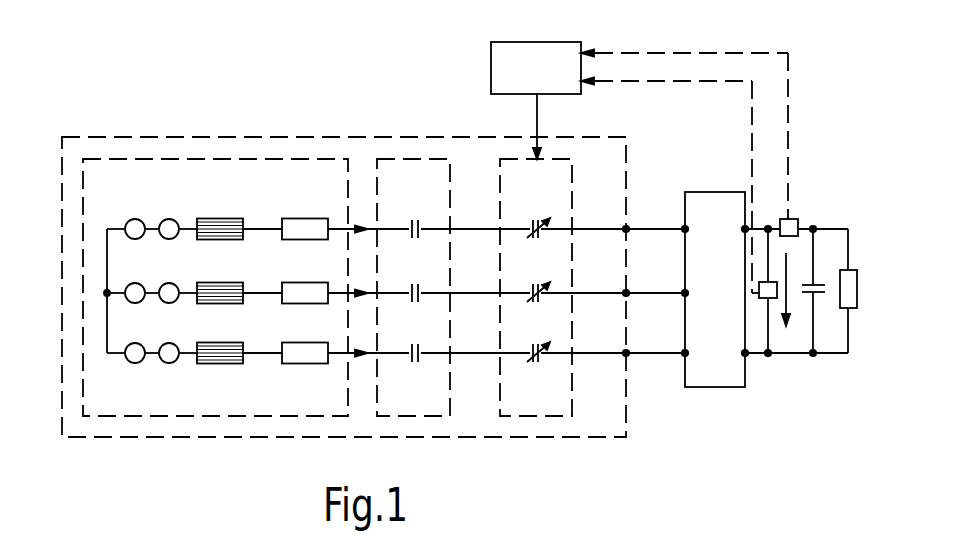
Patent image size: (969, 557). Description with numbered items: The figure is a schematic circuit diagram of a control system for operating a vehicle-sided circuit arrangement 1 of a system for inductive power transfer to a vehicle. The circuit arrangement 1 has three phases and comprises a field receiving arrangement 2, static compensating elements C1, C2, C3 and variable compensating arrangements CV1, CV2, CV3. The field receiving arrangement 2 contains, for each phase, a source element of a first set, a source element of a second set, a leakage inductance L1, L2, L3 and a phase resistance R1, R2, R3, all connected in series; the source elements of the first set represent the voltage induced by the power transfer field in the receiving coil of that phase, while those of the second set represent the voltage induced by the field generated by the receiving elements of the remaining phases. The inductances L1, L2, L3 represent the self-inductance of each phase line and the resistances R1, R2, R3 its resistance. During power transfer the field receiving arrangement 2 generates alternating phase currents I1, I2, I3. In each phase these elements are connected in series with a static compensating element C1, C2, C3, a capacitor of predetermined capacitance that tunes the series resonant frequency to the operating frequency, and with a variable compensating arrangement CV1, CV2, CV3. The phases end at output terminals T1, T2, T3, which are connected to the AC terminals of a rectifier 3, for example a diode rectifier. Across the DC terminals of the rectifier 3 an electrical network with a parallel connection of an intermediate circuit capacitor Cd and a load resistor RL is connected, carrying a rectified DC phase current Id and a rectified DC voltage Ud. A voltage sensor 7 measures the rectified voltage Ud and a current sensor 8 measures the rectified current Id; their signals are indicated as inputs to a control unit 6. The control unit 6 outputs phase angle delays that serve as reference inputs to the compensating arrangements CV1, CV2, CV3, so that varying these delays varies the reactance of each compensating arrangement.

The circuit arrangement 1 is at (170, 440).
The field receiving arrangement 2 is at (247, 418).
The rectifier 3 is at (715, 389).
The control unit 6 is at (565, 40).
The voltage sensor 7 is at (765, 299).
The current sensor 8 is at (793, 220).
The inductance L1 is at (220, 213).
The inductance L2 is at (220, 276).
The inductance L3 is at (220, 336).
The phase resistance R1 is at (305, 213).
The phase resistance R2 is at (305, 276).
The phase resistance R3 is at (305, 336).
The phase current I1 is at (361, 209).
The phase current I2 is at (361, 273).
The phase current I3 is at (361, 333).
The static compensating element C1 is at (414, 212).
The static compensating element C2 is at (414, 275).
The static compensating element C3 is at (414, 335).
The variable compensating arrangement CV1 is at (534, 212).
The variable compensating arrangement CV2 is at (534, 275).
The variable compensating arrangement CV3 is at (534, 335).
The output terminal T1 is at (627, 227).
The output terminal T2 is at (627, 291).
The output terminal T3 is at (627, 351).
The rectified phase current Id is at (755, 225).
The rectified voltage Ud is at (789, 281).
The intermediate circuit capacitor Cd is at (817, 284).
The load resistor RL is at (858, 291).